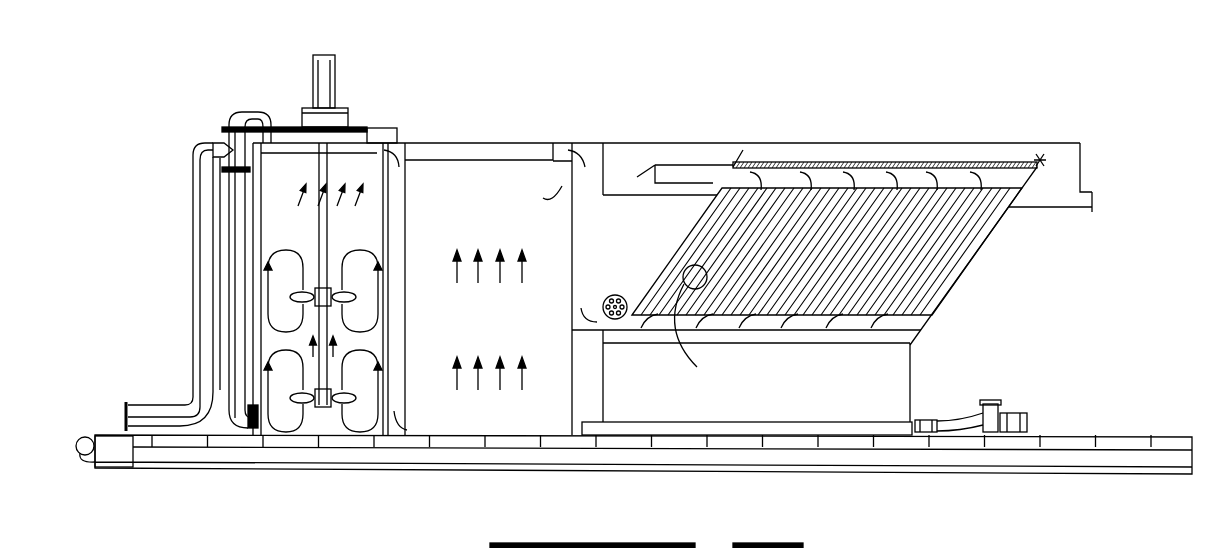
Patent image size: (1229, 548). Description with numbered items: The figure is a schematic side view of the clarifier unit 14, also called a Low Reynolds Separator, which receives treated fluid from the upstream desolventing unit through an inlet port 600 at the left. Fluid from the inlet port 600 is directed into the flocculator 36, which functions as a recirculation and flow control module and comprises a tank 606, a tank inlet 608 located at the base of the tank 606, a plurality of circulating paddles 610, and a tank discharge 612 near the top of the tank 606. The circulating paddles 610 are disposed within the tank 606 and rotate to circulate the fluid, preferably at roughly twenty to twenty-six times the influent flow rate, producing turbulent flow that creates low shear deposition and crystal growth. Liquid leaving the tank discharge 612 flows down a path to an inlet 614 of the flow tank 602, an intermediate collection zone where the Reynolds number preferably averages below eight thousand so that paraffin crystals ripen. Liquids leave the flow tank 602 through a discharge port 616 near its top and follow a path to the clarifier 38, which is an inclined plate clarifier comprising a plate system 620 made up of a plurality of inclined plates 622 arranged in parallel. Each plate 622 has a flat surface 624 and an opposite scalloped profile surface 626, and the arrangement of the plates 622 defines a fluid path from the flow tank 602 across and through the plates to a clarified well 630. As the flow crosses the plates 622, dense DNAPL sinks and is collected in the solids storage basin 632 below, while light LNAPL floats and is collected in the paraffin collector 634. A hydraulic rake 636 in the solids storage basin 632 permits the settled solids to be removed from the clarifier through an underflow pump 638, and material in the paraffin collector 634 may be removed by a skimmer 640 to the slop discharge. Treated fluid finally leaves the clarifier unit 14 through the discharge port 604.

The clarifier unit 14 is at (631, 75).
The flocculator 36 is at (287, 158).
The clarifier 38 is at (860, 163).
The inlet port 600 is at (163, 403).
The flow tank 602 is at (495, 173).
The discharge port 604 is at (616, 296).
The tank 606 is at (263, 177).
The tank inlet 608 is at (240, 423).
The circulating paddles 610 is at (333, 385).
The tank discharge 612 is at (380, 128).
The inlet 614 is at (431, 437).
The discharge port 616 is at (562, 143).
The plate system 620 is at (977, 260).
The inclined plates 622 is at (967, 163).
The flat surface 624 is at (1069, 541).
The scalloped profile surface 626 is at (1008, 547).
The clarified well 630 is at (665, 218).
The solids storage basin 632 is at (845, 390).
The paraffin collector 634 is at (1042, 185).
The hydraulic rake 636 is at (695, 418).
The underflow pump 638 is at (1015, 410).
The skimmer 640 is at (1095, 198).